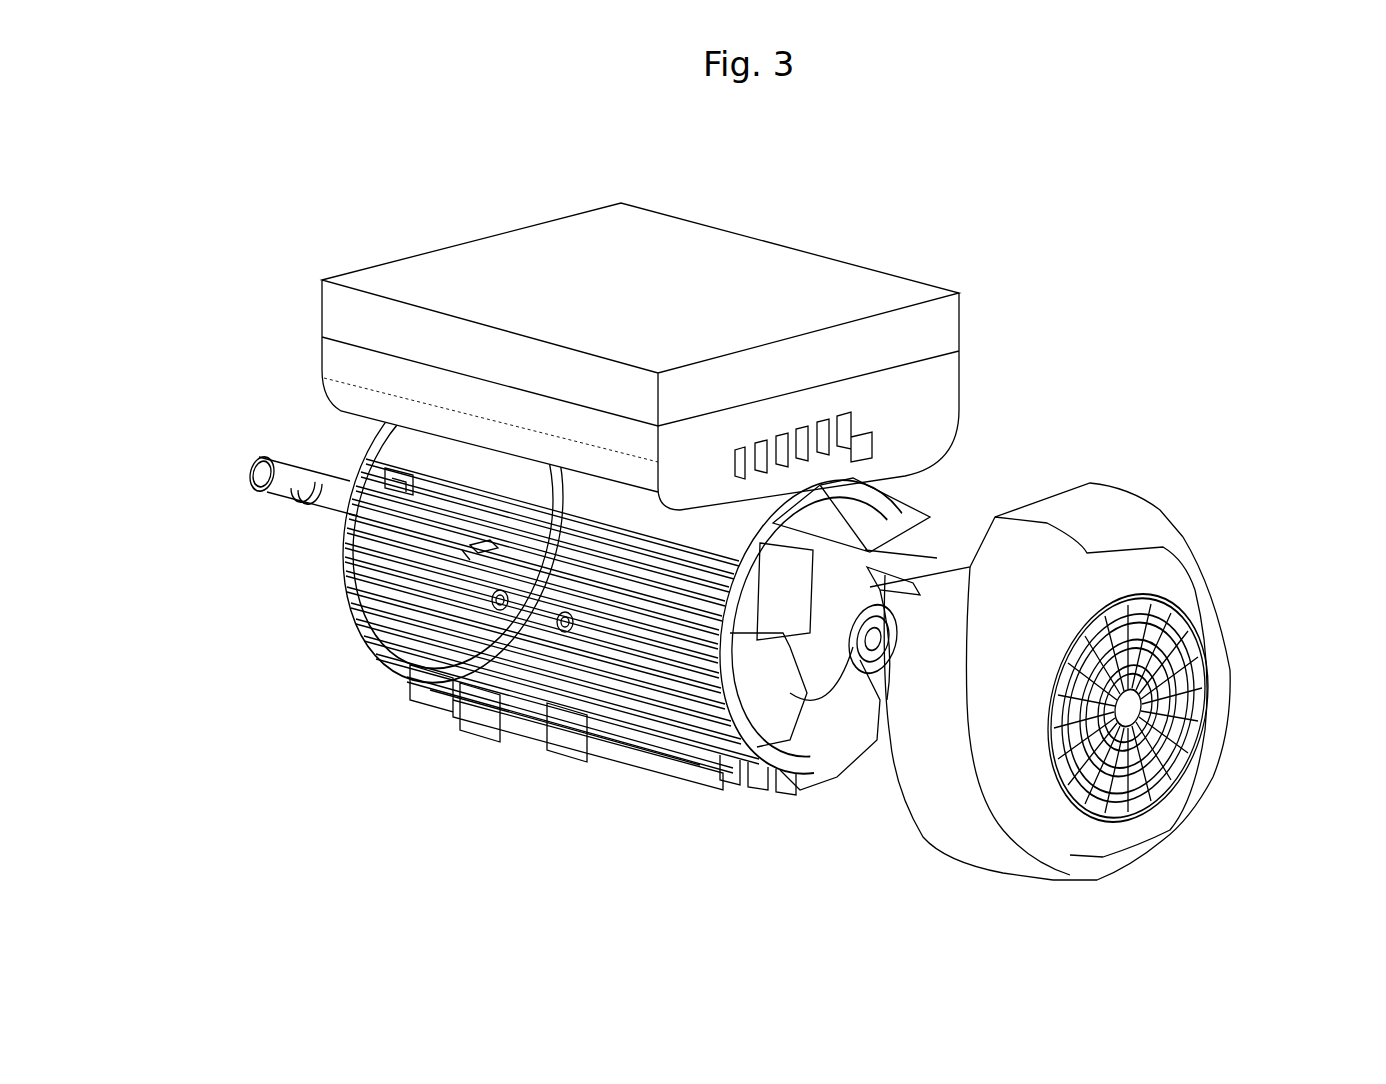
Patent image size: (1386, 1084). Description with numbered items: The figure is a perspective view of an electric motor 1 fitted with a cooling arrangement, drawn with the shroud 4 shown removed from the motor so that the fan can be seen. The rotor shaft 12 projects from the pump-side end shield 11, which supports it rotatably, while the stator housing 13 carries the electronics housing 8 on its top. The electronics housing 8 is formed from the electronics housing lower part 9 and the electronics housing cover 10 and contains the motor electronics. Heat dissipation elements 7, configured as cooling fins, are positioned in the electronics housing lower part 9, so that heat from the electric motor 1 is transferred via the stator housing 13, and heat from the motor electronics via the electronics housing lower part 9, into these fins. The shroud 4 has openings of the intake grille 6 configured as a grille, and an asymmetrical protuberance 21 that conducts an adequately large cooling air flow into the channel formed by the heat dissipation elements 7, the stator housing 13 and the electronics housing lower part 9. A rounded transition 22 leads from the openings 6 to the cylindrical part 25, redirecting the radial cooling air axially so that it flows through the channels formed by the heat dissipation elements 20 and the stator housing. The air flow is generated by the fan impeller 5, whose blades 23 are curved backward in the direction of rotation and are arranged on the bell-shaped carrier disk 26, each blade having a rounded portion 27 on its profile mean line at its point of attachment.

The electric motor 1 is at (335, 633).
The shroud 4 is at (1100, 692).
The fan impeller 5 is at (707, 688).
The intake grille 6 is at (1165, 744).
The heat dissipation elements 7 is at (732, 467).
The electronics housing 8 is at (611, 356).
The electronics housing lower part 9 is at (935, 388).
The electronics housing cover 10 is at (945, 328).
The pump-side end shield 11 is at (370, 455).
The rotor shaft 12 is at (323, 487).
The stator housing 13 is at (430, 460).
The heat dissipation elements 20 is at (627, 693).
The asymmetrical protuberance 21 is at (1097, 534).
The rounded transition 22 is at (1035, 845).
The blades 23 is at (830, 765).
The cylindrical part 25 is at (943, 832).
The bell-shaped carrier disk 26 is at (830, 667).
The rounded portion 27 is at (790, 650).